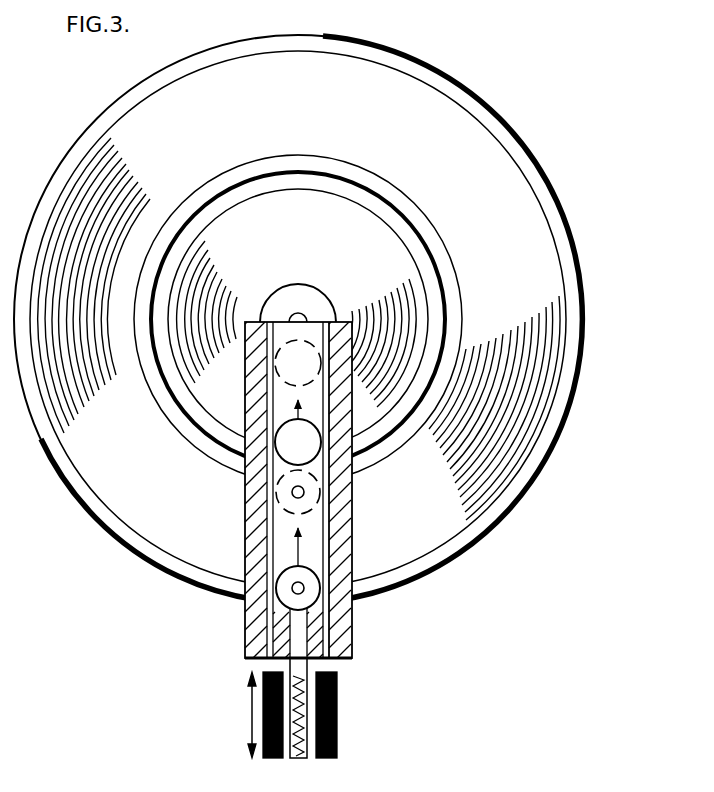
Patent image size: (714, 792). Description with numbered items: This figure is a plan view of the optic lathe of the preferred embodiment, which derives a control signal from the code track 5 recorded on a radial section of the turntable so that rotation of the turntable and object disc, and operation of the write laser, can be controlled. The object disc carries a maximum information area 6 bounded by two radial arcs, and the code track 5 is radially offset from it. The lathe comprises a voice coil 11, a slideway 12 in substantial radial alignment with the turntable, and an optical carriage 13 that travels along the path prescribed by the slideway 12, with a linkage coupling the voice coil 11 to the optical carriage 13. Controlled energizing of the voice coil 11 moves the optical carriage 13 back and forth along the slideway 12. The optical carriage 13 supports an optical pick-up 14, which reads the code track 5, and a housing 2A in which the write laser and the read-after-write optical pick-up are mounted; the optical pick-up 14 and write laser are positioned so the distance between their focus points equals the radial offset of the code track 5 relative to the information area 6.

The code track 5 is at (456, 262).
The maximum information area 6 is at (313, 276).
The housing 2A is at (322, 440).
The optical pick-up 14 is at (322, 568).
The optical carriage 13 is at (338, 602).
The slideway 12 is at (356, 626).
The voice coil 11 is at (344, 706).